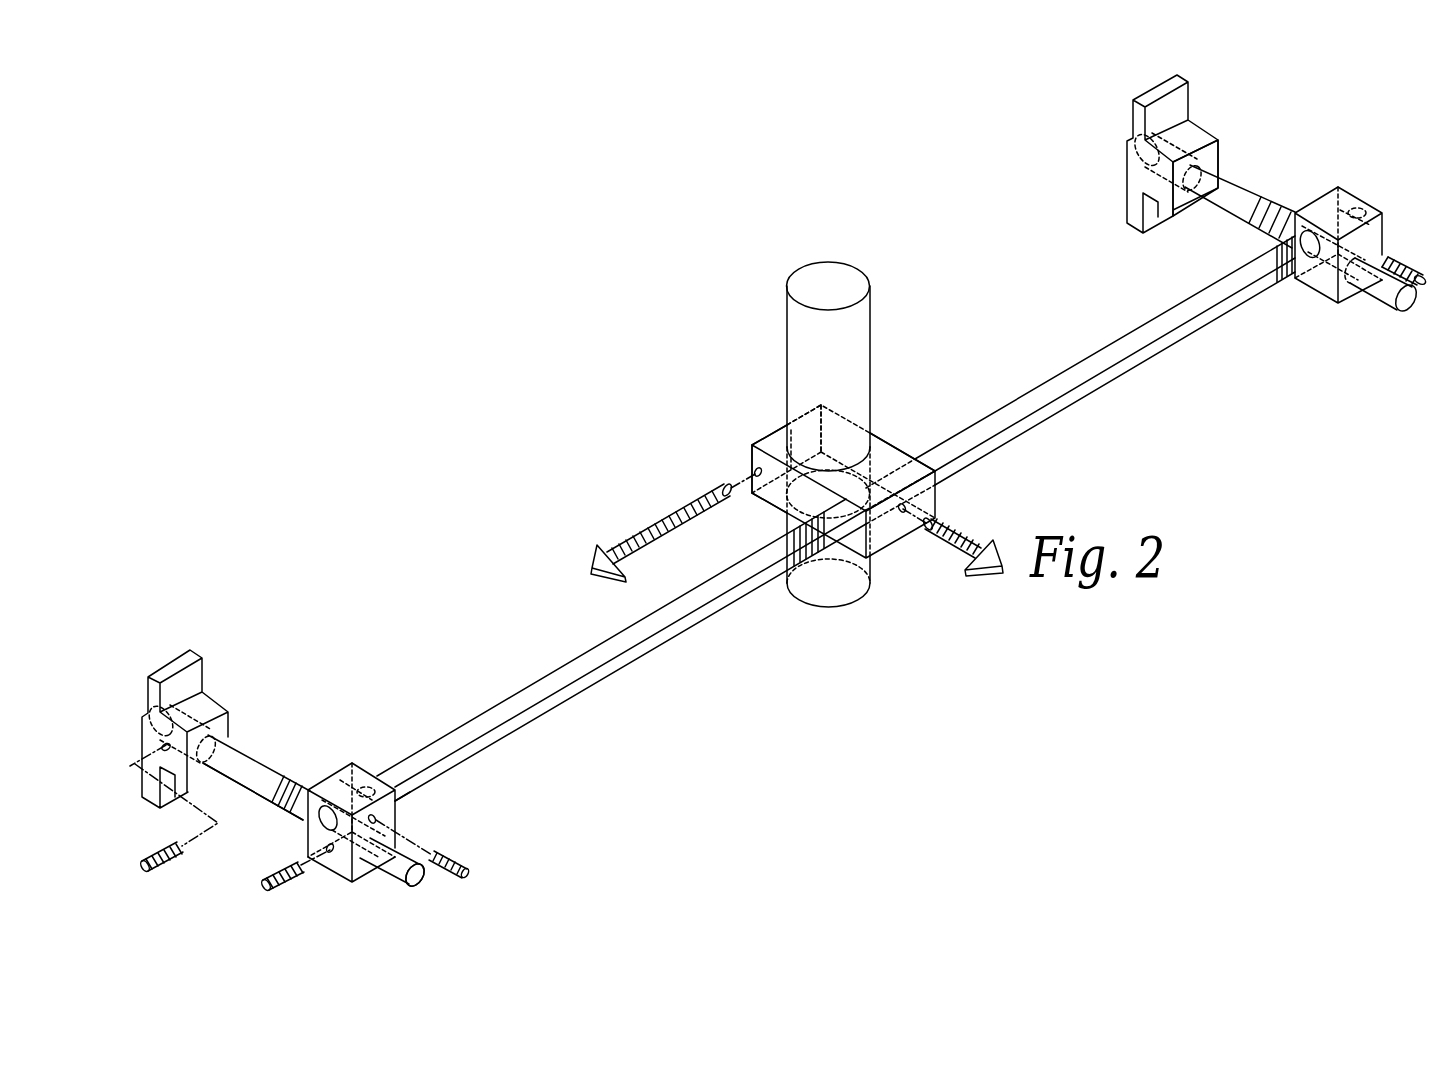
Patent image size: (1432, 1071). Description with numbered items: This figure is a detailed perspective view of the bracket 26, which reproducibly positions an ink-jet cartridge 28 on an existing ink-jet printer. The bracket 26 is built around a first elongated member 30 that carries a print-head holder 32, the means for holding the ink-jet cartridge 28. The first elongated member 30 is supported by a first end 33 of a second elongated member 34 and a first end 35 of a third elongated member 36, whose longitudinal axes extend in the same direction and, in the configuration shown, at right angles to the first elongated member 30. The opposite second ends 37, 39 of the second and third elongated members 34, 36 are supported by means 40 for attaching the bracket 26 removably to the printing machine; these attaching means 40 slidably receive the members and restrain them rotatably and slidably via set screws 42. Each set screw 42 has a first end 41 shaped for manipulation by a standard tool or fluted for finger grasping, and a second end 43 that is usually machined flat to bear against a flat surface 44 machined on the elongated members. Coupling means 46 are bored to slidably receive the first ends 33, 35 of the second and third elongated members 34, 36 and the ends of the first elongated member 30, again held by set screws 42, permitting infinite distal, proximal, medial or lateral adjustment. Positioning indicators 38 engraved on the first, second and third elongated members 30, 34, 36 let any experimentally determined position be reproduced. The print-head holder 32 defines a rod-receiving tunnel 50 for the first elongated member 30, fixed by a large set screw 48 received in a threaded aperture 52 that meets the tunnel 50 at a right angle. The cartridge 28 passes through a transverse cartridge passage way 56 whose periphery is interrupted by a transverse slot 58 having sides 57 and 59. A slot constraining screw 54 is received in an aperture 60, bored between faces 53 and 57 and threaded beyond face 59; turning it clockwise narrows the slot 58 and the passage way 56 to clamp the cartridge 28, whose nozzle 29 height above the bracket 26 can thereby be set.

The bracket 26 is at (959, 686).
The ink-jet cartridge 28 is at (807, 365).
The nozzle 29 is at (846, 270).
The first elongated member 30 is at (628, 640).
The print-head holder 32 is at (872, 545).
The first end of second elongated member 33 is at (378, 872).
The second elongated member 34 is at (272, 815).
The first end of third elongated member 35 is at (1383, 292).
The third elongated member 36 is at (1227, 192).
The second end of second elongated member 37 is at (228, 720).
The positioning indicators 38 is at (293, 790).
The second end of third elongated member 39 is at (1208, 160).
The means for attaching the bracket 40 is at (192, 682).
The first end of set screw 41 is at (144, 870).
The set screws 42 is at (150, 874).
The second end of set screw 43 is at (195, 843).
The flat surface 44 is at (410, 792).
The means for coupling 46 is at (358, 770).
The large set screw 48 is at (980, 575).
The rod-receiving tunnel 50 is at (903, 452).
The threaded aperture 52 is at (900, 516).
The face 53 is at (770, 488).
The slot constraining screw 54 is at (668, 505).
The cartridge passage way 56 is at (751, 448).
The side of slot 57 is at (792, 420).
The transverse slot 58 is at (790, 440).
The side of slot 59 is at (817, 408).
The aperture 60 is at (752, 472).